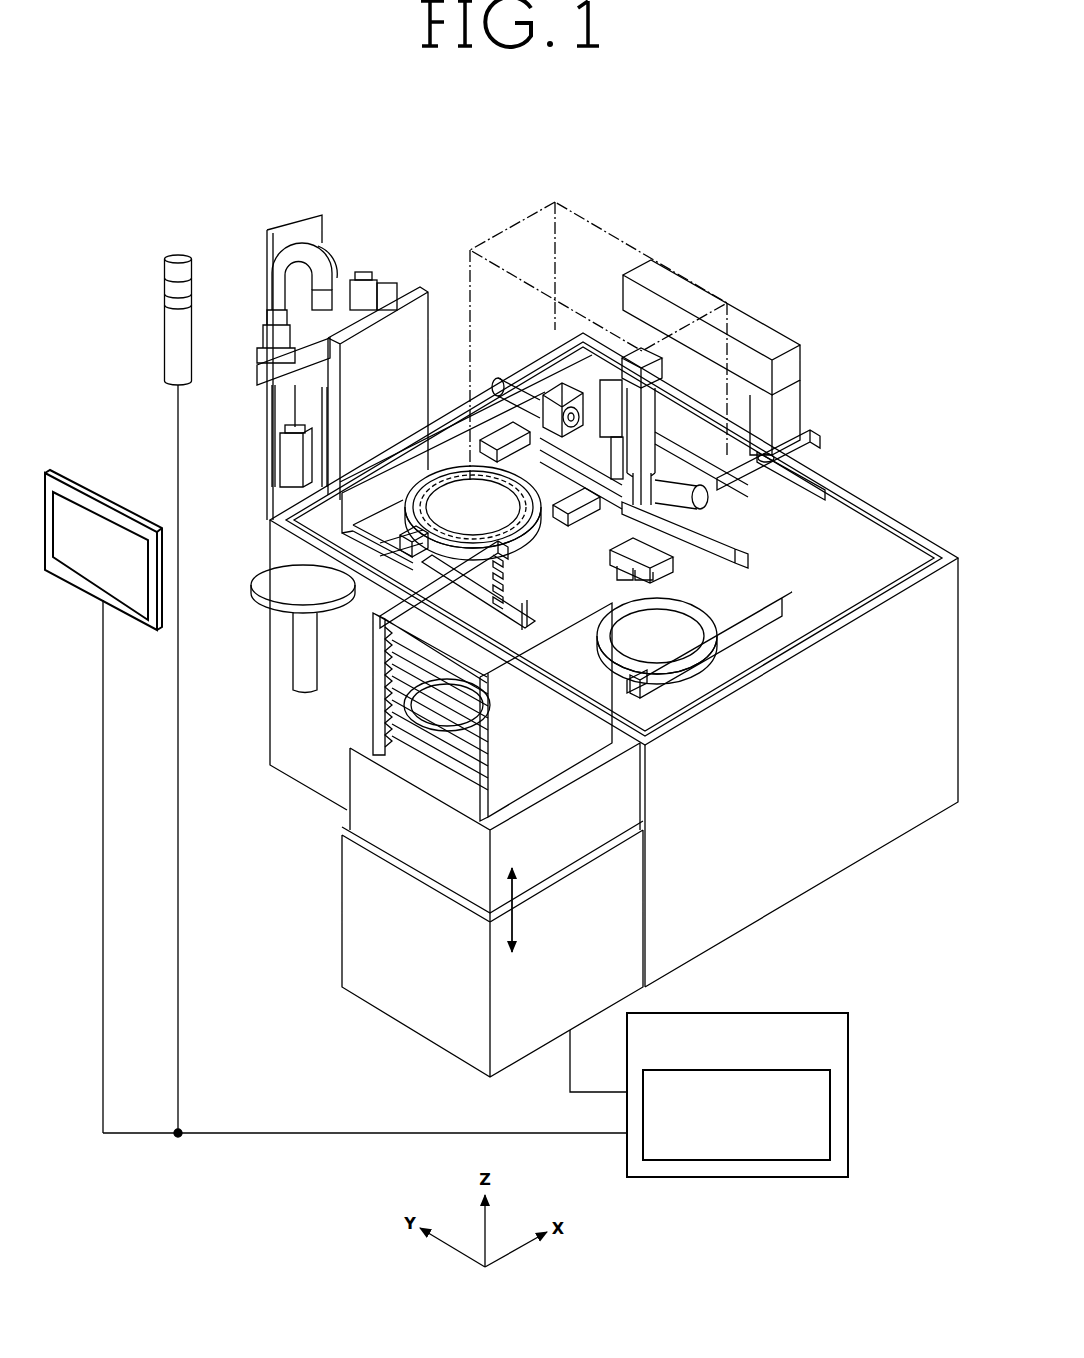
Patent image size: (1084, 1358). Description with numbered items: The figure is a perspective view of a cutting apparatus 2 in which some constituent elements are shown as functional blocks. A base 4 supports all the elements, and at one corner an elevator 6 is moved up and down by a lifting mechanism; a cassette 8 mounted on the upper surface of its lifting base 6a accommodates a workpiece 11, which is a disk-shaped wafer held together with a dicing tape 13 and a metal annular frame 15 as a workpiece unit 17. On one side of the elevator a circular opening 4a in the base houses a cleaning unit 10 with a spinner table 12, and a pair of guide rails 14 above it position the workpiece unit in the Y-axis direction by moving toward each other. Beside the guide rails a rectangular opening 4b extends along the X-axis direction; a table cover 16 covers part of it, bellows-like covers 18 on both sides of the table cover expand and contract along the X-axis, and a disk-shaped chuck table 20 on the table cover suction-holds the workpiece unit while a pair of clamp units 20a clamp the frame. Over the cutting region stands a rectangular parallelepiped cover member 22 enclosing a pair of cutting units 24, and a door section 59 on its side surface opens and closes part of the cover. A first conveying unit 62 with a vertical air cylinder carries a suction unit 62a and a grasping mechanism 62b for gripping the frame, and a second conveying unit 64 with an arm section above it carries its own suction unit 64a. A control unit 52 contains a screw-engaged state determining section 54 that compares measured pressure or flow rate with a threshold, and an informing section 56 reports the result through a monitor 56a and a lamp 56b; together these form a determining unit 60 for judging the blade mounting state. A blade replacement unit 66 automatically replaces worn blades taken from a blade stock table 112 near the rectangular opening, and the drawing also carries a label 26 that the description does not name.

The cutting apparatus 2 is at (803, 195).
The base 4 is at (820, 853).
The circular opening 4a is at (665, 715).
The rectangular opening 4b is at (470, 410).
The elevator 6 is at (380, 998).
The lifting base 6a is at (383, 845).
The cassette 8 is at (370, 690).
The cleaning unit 10 is at (692, 633).
The workpiece 11 is at (440, 503).
The spinner table 12 is at (653, 650).
The dicing tape 13 is at (400, 743).
The guide rails 14 is at (553, 598).
The annular frame 15 is at (437, 750).
The table cover 16 is at (513, 550).
The workpiece unit 17 is at (422, 478).
The bellows-like covers 18 is at (606, 378).
The chuck table 20 is at (461, 540).
The clamp units 20a is at (413, 477).
The cover member 22 is at (518, 243).
The cutting units 24 is at (524, 380).
The imaging unit 26 is at (521, 383).
The control unit 52 is at (733, 1013).
The screw-engaged state determining section 54 is at (833, 1123).
The informing section 56 is at (87, 263).
The monitor 56a is at (109, 501).
The lamp 56b is at (178, 257).
The door section 59 is at (487, 360).
The determining unit 60 is at (203, 1152).
The first conveying unit 62 is at (652, 345).
The suction unit 62a is at (727, 533).
The grasping mechanism 62b is at (666, 578).
The second conveying unit 64 is at (787, 330).
The suction unit 64a is at (818, 473).
The blade replacement unit 66 is at (285, 218).
The blade stock table 112 is at (256, 566).